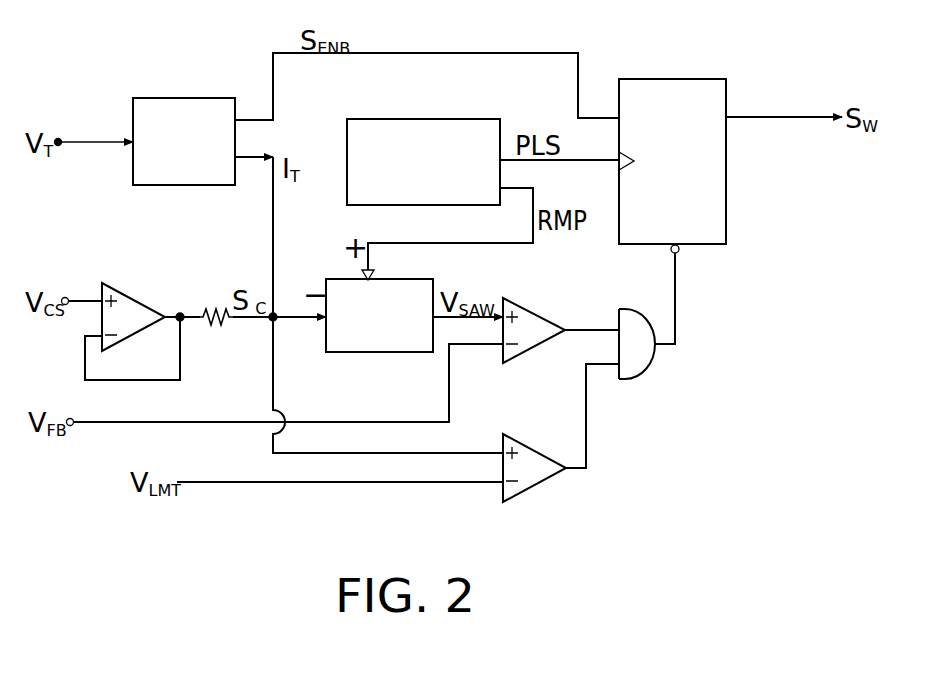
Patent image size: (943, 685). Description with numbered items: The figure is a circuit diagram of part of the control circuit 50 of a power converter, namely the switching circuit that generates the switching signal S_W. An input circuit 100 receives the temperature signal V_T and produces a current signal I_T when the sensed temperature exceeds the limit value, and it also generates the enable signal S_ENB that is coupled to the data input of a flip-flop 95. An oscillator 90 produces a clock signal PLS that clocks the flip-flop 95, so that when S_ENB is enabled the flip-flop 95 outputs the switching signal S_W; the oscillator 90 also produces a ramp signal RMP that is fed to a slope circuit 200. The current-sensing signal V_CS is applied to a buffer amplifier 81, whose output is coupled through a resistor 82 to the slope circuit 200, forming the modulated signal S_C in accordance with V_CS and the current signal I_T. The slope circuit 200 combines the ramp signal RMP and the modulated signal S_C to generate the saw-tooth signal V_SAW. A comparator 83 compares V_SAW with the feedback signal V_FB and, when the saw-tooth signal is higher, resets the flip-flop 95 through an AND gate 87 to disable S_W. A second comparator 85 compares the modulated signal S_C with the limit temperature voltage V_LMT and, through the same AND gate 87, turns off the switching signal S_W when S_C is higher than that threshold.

The control circuit 50 is at (817, 55).
The input circuit 100 is at (183, 98).
The oscillator 90 is at (347, 119).
The flip-flop 95 is at (726, 193).
The buffer amplifier 81 is at (137, 297).
The resistor 82 is at (219, 327).
The slope circuit 200 is at (325, 276).
The comparator 83 is at (540, 313).
The AND gate 87 is at (645, 363).
The comparator 85 is at (535, 485).